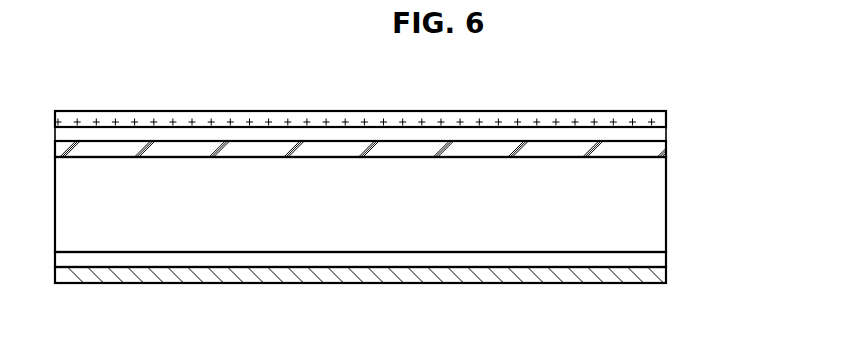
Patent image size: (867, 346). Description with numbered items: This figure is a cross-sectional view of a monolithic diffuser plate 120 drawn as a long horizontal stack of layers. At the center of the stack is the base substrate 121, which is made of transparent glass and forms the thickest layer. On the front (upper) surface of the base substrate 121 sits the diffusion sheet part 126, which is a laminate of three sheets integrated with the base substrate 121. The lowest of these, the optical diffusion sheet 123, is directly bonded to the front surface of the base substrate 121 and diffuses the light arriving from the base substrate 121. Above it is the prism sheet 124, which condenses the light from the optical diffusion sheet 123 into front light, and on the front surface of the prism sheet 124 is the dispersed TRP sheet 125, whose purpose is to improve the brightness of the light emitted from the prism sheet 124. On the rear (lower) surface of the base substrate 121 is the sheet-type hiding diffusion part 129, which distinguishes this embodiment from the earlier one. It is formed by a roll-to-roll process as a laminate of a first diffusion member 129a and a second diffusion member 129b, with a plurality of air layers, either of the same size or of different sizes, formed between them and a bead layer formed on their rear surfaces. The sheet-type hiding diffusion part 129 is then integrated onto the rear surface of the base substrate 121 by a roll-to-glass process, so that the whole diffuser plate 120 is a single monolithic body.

The monolithic diffuser plate 120 is at (618, 68).
The base substrate 121 is at (660, 203).
The optical diffusion sheet 123 is at (658, 157).
The prism sheet 124 is at (658, 135).
The dispersed TRP sheet 125 is at (662, 120).
The diffusion sheet part 126 is at (425, 132).
The sheet-type hiding diffusion part 129 is at (431, 266).
The first diffusion member 129a is at (660, 275).
The second diffusion member 129b is at (660, 260).